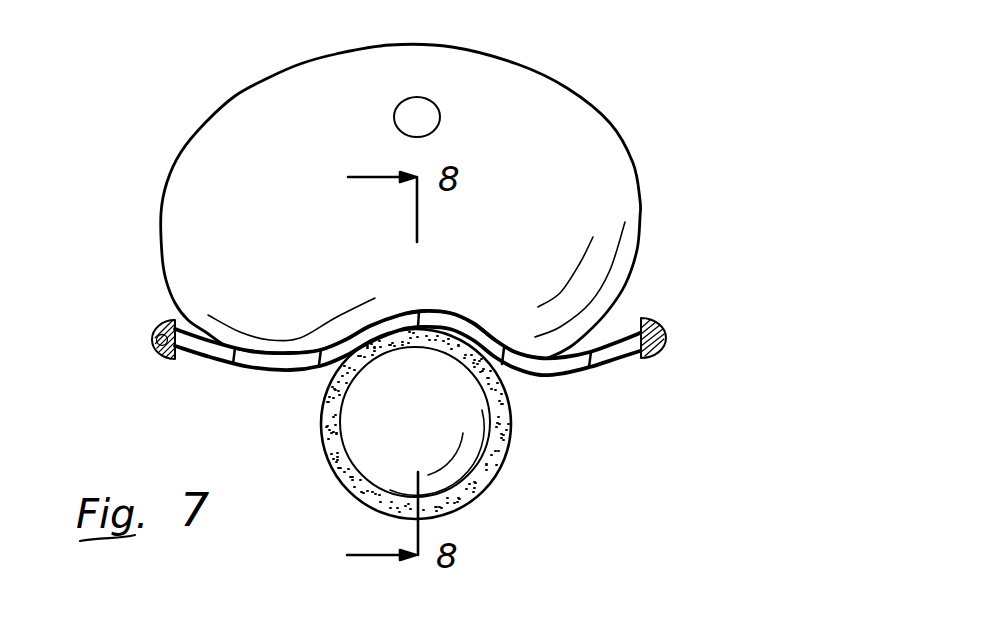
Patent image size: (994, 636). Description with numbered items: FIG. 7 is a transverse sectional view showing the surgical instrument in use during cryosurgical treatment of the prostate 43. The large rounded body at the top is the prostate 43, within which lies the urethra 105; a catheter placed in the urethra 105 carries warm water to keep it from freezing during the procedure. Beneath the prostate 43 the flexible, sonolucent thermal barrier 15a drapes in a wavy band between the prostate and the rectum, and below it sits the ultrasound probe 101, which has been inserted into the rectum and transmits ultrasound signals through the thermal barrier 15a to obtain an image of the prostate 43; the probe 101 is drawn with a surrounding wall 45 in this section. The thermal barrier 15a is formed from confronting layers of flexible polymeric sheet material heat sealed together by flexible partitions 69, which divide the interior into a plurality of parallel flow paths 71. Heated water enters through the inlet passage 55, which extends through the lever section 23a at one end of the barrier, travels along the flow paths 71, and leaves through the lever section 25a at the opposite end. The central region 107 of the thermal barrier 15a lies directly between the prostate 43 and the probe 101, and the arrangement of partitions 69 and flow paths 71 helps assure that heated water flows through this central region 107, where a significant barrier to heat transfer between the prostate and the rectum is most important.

The prostate 43 is at (617, 258).
The urethra 105 is at (427, 120).
The thermal barrier 15a is at (256, 380).
The flow paths 71 is at (328, 339).
The central region 107 is at (416, 310).
The lever section 23a is at (168, 320).
The inlet passage 55 is at (157, 354).
The lever section 25a is at (666, 335).
The flexible partitions 69 is at (568, 375).
The tubular member wall 45 is at (482, 498).
The ultrasound probe 101 is at (470, 437).